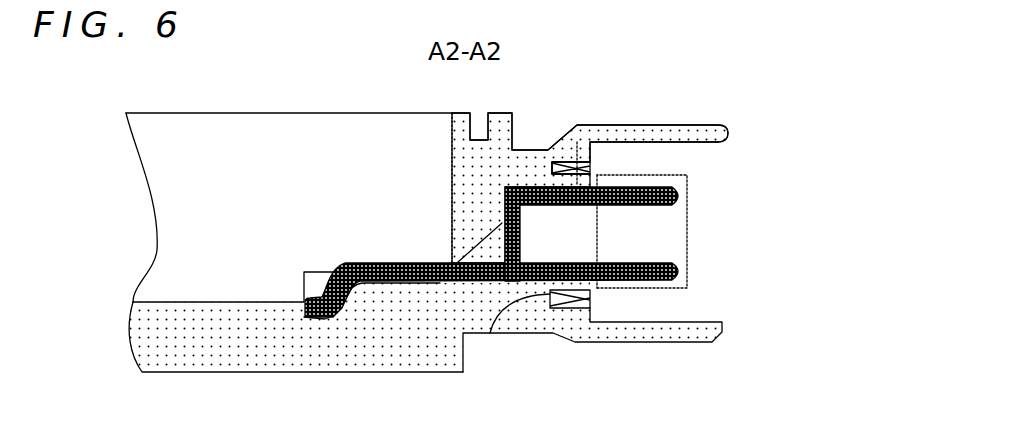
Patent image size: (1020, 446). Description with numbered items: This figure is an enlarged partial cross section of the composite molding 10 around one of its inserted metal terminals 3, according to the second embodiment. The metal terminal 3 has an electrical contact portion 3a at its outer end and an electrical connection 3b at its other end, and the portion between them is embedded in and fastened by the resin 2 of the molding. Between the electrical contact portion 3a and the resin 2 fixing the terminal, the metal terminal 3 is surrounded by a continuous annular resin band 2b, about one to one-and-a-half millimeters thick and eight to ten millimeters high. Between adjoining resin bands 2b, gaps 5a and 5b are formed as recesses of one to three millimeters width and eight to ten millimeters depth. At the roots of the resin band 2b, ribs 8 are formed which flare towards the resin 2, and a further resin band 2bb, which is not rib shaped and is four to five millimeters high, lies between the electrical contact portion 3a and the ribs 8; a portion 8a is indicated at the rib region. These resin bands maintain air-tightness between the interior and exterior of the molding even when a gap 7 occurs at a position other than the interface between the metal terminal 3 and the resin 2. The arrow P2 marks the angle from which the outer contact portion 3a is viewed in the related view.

The resin 2 is at (460, 142).
The resin band 2b is at (572, 168).
The resin band 2bb is at (590, 185).
The metal terminal 3 is at (412, 263).
The electrical contact portion 3a is at (367, 263).
The electrical connection 3b is at (674, 286).
The gap 5a is at (593, 233).
The gap 5b is at (593, 157).
The gap 7 is at (440, 283).
The rib 8 is at (528, 186).
The engaging portion 8a is at (571, 300).
The composite molding 10 is at (167, 150).
The angle P2 is at (823, 198).